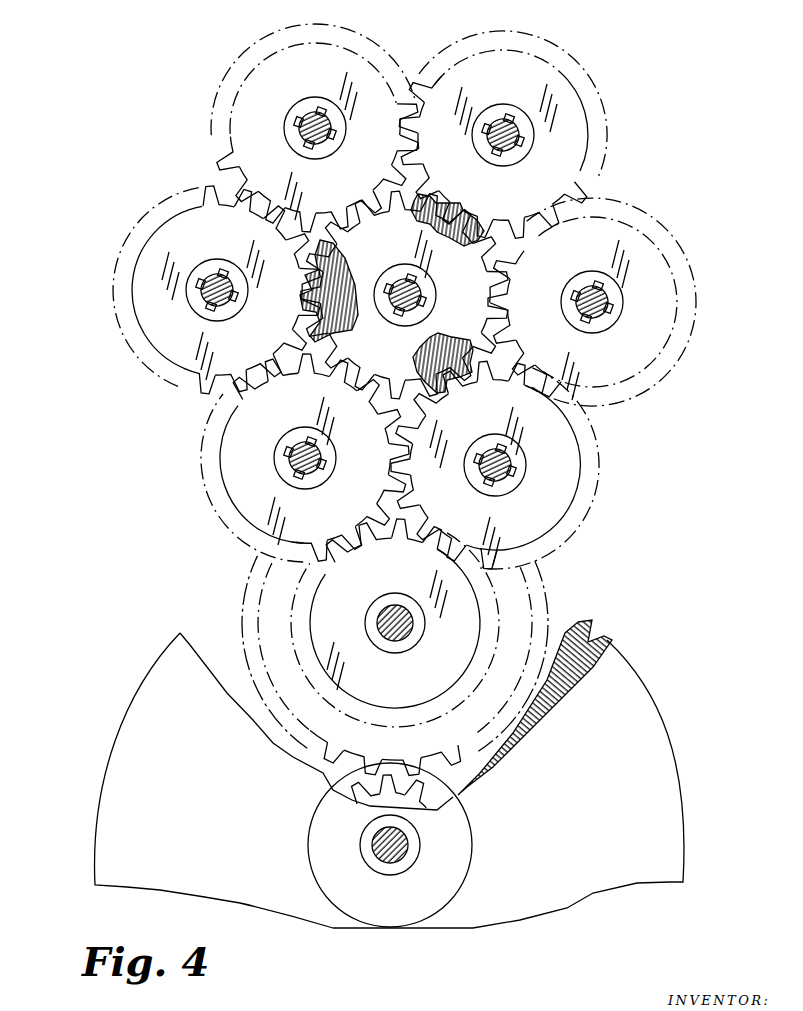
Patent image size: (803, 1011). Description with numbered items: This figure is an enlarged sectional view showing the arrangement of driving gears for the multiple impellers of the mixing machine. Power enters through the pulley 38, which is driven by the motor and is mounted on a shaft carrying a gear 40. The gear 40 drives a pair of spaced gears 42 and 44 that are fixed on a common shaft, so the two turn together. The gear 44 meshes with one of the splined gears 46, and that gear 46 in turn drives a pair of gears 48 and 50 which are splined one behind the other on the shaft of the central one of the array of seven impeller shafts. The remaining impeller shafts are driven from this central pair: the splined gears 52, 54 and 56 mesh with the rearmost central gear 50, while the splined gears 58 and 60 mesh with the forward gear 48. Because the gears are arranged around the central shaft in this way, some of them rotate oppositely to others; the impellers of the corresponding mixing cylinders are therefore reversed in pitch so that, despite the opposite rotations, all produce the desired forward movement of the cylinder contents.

The pulley 38 is at (119, 759).
The gear 40 is at (378, 797).
The gear 42 is at (395, 667).
The gear 44 is at (385, 584).
The splined gear 46 is at (333, 437).
The forward gear 48 is at (473, 308).
The rearmost central gear 50 is at (337, 278).
The splined gear 52 is at (268, 339).
The splined gear 54 is at (518, 206).
The splined gear 56 is at (493, 419).
The splined gear 58 is at (270, 140).
The splined gear 60 is at (548, 303).